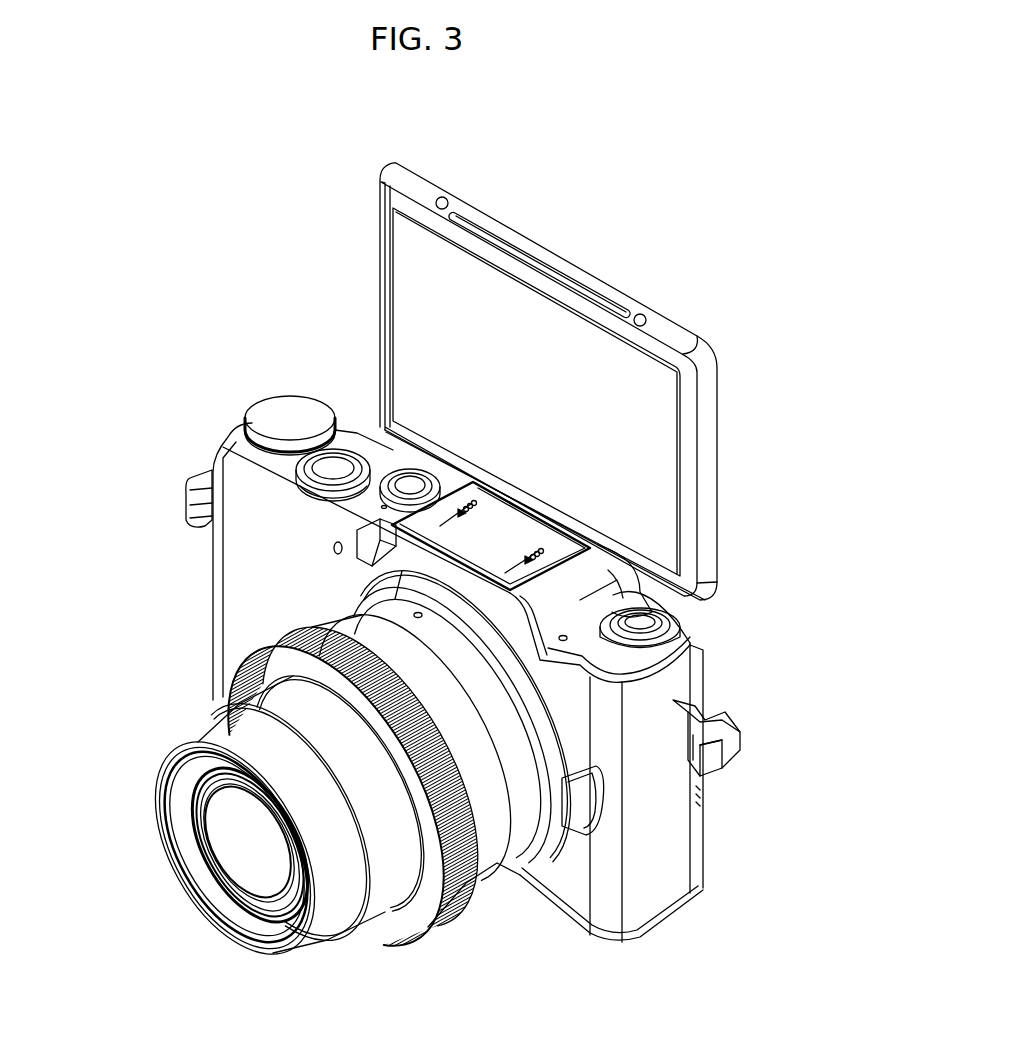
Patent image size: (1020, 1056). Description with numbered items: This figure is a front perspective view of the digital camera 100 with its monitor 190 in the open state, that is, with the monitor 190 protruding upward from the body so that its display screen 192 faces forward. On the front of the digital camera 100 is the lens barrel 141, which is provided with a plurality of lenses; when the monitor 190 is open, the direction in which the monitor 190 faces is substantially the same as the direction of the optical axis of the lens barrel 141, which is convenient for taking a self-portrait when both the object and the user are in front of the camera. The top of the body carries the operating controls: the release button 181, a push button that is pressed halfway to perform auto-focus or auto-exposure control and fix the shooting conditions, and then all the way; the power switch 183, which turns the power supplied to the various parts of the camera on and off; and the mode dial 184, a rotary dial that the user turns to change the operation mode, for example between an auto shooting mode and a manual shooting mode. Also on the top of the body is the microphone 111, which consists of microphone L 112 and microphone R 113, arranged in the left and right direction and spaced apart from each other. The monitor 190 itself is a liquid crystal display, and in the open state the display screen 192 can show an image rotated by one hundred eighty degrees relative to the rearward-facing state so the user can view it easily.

The digital camera 100 is at (654, 184).
The monitor 190 is at (378, 206).
The display screen 192 is at (645, 479).
The mode dial 184 is at (289, 410).
The power switch 183 is at (297, 473).
The release button 181 is at (397, 518).
The microphone 111 is at (112, 602).
The microphone R 113 is at (415, 556).
The microphone L 112 is at (500, 585).
The lens barrel 141 is at (375, 937).